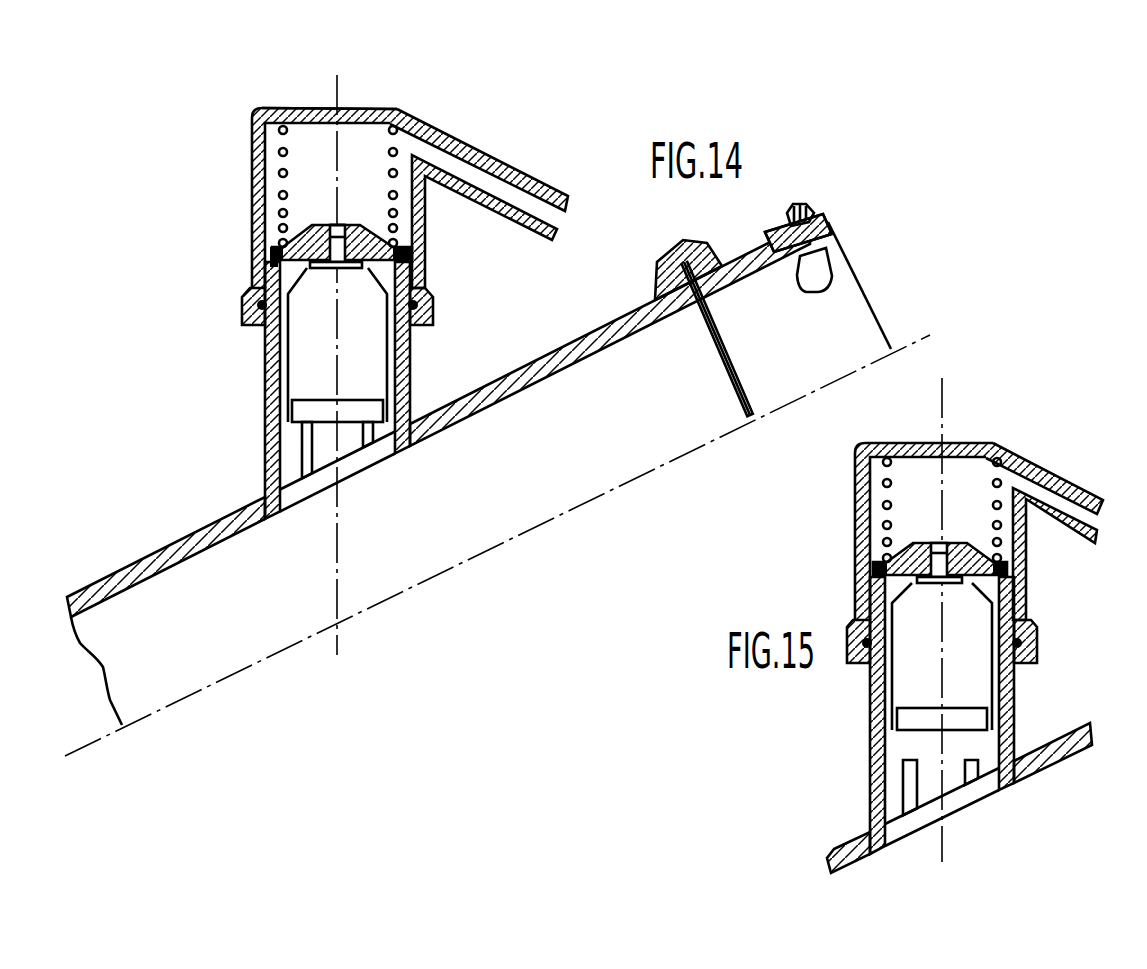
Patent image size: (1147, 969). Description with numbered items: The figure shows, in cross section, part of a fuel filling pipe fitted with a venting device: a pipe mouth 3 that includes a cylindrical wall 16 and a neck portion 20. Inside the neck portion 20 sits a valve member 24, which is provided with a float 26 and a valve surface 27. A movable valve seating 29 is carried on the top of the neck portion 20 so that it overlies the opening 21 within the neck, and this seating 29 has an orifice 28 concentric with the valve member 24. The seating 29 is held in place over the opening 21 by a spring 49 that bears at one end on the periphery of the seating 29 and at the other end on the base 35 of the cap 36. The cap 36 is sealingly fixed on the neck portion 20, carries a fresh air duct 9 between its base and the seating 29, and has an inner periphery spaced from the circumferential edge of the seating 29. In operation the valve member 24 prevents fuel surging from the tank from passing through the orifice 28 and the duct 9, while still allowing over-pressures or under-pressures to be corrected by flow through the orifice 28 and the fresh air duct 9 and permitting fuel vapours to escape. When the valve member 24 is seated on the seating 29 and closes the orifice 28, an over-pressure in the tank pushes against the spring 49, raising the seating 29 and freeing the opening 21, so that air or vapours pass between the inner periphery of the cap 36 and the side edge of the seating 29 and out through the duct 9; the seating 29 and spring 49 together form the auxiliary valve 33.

In FIG. 14, the pipe mouth 3 is at (580, 332).
In FIG. 14, the fresh air duct 9 is at (537, 187).
In FIG. 15, the fresh air duct 9 is at (1094, 546).
In FIG. 14, the cylindrical wall 16 is at (548, 383).
In FIG. 15, the cylindrical wall 16 is at (959, 798).
In FIG. 14, the neck portion 20 is at (265, 427).
In FIG. 15, the neck portion 20 is at (870, 766).
In FIG. 14, the opening 21 is at (267, 273).
In FIG. 14, the valve member 24 is at (318, 334).
In FIG. 15, the valve member 24 is at (957, 640).
In FIG. 14, the float 26 is at (310, 405).
In FIG. 15, the float 26 is at (942, 761).
In FIG. 14, the valve surface 27 is at (352, 276).
In FIG. 15, the valve surface 27 is at (939, 580).
In FIG. 14, the orifice 28 is at (362, 217).
In FIG. 15, the orifice 28 is at (937, 542).
In FIG. 14, the movable valve seating 29 is at (305, 226).
In FIG. 15, the movable valve seating 29 is at (970, 543).
In FIG. 14, the auxiliary valve 33 is at (348, 226).
In FIG. 14, the base of the cap 35 is at (349, 128).
In FIG. 14, the cap 36 is at (252, 222).
In FIG. 15, the cap 36 is at (924, 531).
In FIG. 14, the spring 49 is at (287, 152).
In FIG. 15, the spring 49 is at (887, 483).